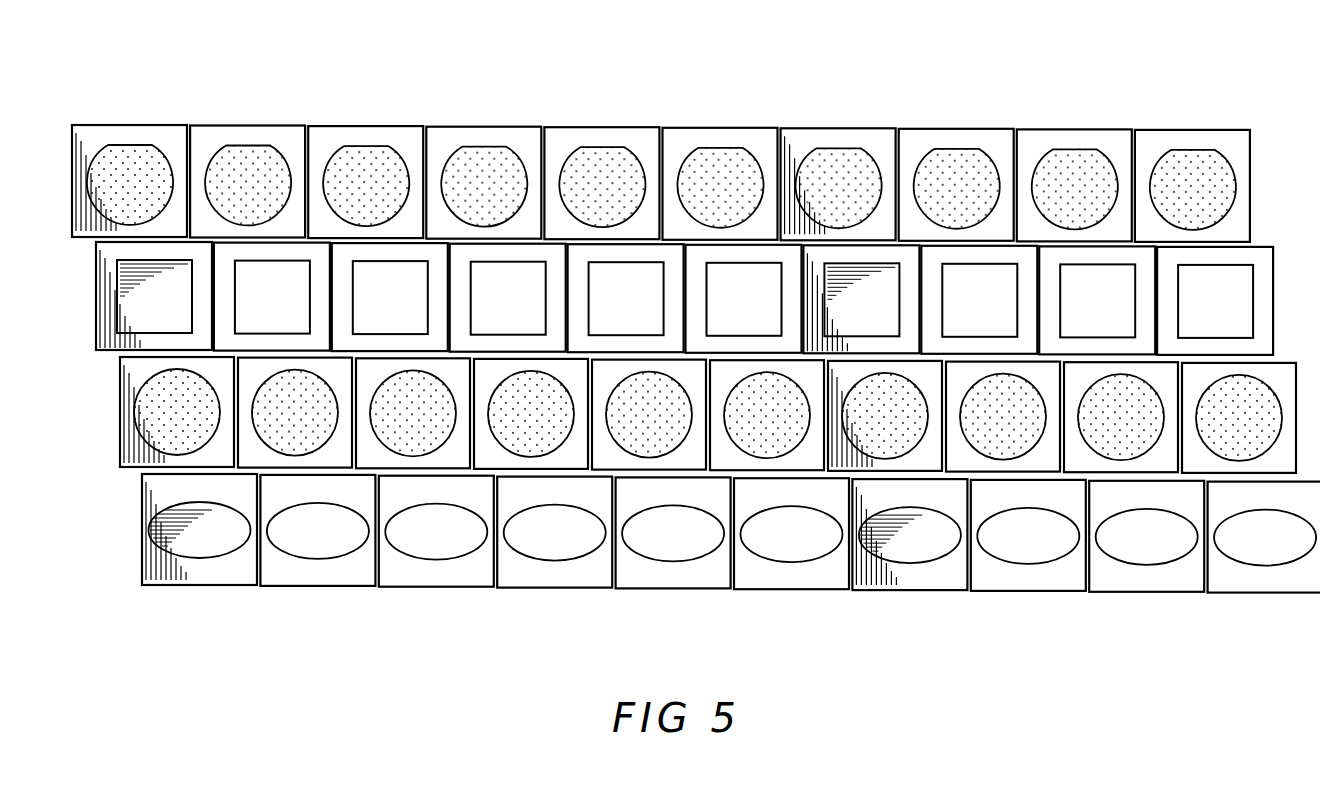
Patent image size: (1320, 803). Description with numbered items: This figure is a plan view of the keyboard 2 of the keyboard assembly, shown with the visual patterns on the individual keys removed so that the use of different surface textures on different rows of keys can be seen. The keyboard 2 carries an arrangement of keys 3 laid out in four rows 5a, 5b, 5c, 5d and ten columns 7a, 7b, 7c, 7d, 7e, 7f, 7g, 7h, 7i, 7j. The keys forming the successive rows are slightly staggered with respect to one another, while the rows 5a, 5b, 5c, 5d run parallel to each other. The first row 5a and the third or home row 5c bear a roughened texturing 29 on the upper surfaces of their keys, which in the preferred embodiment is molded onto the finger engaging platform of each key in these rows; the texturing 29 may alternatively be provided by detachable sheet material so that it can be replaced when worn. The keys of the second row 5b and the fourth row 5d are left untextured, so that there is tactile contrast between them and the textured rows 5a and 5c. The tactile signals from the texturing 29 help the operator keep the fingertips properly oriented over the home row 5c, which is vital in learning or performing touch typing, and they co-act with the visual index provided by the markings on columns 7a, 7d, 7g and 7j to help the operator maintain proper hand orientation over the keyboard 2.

The keyboard 2 is at (238, 84).
The arrangement of keys 3 is at (787, 124).
The roughened texturing 29 is at (362, 163).
The first row of keys 5a is at (1259, 204).
The second row of keys 5b is at (1279, 309).
The home row of keys 5c is at (115, 440).
The fourth row of keys 5d is at (136, 548).
The first column of keys 7a is at (223, 590).
The second column of keys 7b is at (343, 591).
The third column of keys 7c is at (462, 592).
The fourth column of keys 7d is at (575, 593).
The fifth column of keys 7e is at (694, 594).
The sixth column of keys 7f is at (810, 595).
The seventh column of keys 7g is at (928, 596).
The eighth column of keys 7h is at (1050, 597).
The ninth column of keys 7i is at (1168, 597).
The tenth column of keys 7j is at (1273, 598).